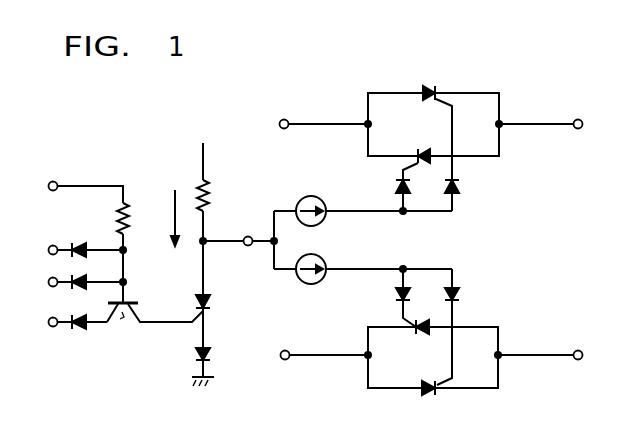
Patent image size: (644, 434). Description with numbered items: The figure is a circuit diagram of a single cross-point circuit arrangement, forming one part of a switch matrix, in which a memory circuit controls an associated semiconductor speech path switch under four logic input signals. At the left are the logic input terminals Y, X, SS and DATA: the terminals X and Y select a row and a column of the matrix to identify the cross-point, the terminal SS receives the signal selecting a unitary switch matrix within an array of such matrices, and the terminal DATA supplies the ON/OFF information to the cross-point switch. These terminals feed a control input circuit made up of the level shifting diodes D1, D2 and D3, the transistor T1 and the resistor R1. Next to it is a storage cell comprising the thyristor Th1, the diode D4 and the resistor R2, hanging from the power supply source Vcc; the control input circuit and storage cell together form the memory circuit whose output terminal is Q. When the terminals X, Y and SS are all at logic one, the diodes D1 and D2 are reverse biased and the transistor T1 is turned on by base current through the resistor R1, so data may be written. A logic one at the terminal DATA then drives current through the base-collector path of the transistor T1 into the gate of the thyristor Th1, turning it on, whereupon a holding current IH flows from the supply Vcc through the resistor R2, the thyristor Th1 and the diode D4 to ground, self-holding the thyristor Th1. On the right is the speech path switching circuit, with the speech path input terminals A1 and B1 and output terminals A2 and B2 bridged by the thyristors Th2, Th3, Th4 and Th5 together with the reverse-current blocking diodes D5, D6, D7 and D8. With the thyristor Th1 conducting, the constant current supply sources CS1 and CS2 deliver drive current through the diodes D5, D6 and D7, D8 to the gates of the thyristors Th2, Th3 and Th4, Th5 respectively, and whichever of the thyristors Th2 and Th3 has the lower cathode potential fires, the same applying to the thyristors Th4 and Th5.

The logic input terminal Y is at (77, 188).
The logic input terminal X is at (52, 250).
The logic input terminal SS is at (45, 282).
The logic input terminal DATA is at (36, 322).
The resistor R1 is at (119, 220).
The resistor R2 is at (212, 194).
The level shifting diode D1 is at (81, 242).
The level shifting diode D2 is at (84, 278).
The level shifting diode D3 is at (78, 329).
The diode D4 is at (212, 356).
The reverse-current blocking diode D5 is at (396, 193).
The reverse-current blocking diode D6 is at (460, 189).
The reverse-current blocking diode D7 is at (396, 297).
The reverse-current blocking diode D8 is at (460, 294).
The transistor T1 is at (155, 327).
The thyristor Th1 is at (211, 301).
The thyristor Th2 is at (428, 86).
The thyristor Th3 is at (422, 149).
The thyristor Th4 is at (421, 334).
The thyristor Th5 is at (433, 395).
The constant current supply source CS1 is at (309, 195).
The constant current supply source CS2 is at (309, 254).
The output terminal Q is at (238, 257).
The holding current IH is at (163, 218).
The power supply source Vcc is at (204, 150).
The input terminal A1 is at (311, 124).
The output terminal A2 is at (557, 124).
The input terminal B1 is at (311, 355).
The output terminal B2 is at (556, 355).